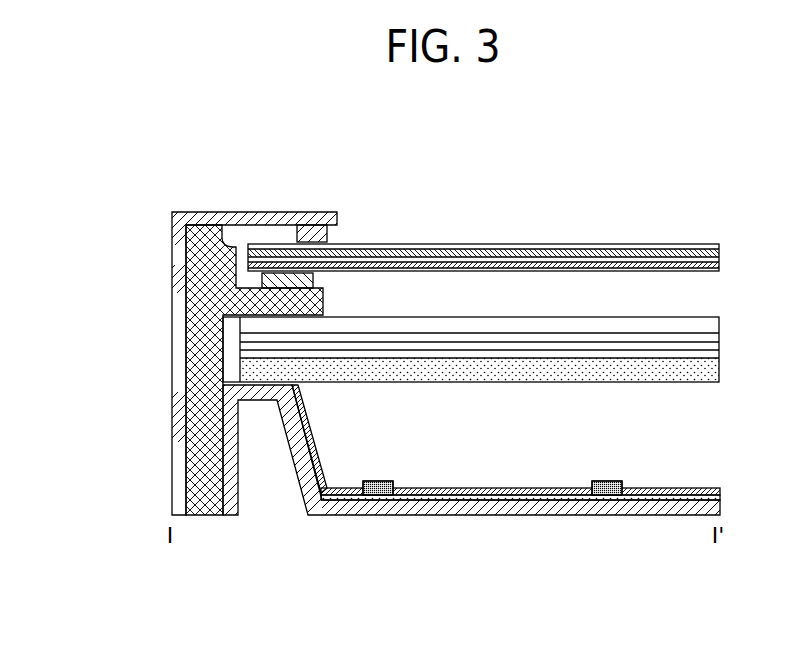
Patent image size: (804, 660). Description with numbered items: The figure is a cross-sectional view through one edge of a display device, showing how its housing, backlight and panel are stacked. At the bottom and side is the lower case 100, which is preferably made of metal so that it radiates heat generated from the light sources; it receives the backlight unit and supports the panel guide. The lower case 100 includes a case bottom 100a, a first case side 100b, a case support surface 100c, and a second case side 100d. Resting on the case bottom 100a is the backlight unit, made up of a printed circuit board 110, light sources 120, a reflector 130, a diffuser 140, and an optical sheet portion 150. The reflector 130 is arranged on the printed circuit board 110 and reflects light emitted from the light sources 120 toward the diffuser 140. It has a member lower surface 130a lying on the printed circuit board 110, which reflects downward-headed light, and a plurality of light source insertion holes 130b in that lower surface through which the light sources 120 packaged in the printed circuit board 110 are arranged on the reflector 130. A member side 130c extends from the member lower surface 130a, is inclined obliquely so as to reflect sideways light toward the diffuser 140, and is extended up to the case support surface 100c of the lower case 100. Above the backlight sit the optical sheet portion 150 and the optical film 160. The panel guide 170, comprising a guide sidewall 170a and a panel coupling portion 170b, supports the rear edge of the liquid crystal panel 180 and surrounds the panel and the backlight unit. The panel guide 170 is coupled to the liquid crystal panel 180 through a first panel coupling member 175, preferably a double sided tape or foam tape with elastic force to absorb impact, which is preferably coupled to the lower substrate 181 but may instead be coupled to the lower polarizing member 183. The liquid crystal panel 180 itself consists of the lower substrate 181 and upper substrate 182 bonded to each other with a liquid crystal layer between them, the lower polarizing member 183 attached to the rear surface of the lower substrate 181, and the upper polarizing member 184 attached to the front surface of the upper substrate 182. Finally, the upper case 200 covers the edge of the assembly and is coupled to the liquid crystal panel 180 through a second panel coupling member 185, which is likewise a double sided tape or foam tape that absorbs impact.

The lower case 100 is at (451, 507).
The case bottom 100a is at (521, 545).
The first case side 100b is at (305, 484).
The case support surface 100c is at (260, 395).
The second case side 100d is at (230, 508).
The printed circuit board 110 is at (525, 498).
The light sources 120 is at (600, 495).
The reflector 130 is at (506, 440).
The member lower surface 130a is at (485, 488).
The light source insertion holes 130b is at (399, 481).
The member side 130c is at (317, 475).
The diffuser 140 is at (688, 372).
The optical sheet portion 150 is at (730, 333).
The optical film 160 is at (708, 324).
The panel guide 170 is at (184, 370).
The guide sidewall 170a is at (95, 312).
The panel coupling portion 170b is at (265, 302).
The first panel coupling member 175 is at (275, 280).
The liquid crystal panel 180 is at (483, 194).
The lower substrate 181 is at (467, 262).
The upper substrate 182 is at (518, 253).
The lower polarizing member 183 is at (578, 151).
The upper polarizing member 184 is at (573, 246).
The second panel coupling member 185 is at (312, 238).
The upper case 200 is at (208, 217).